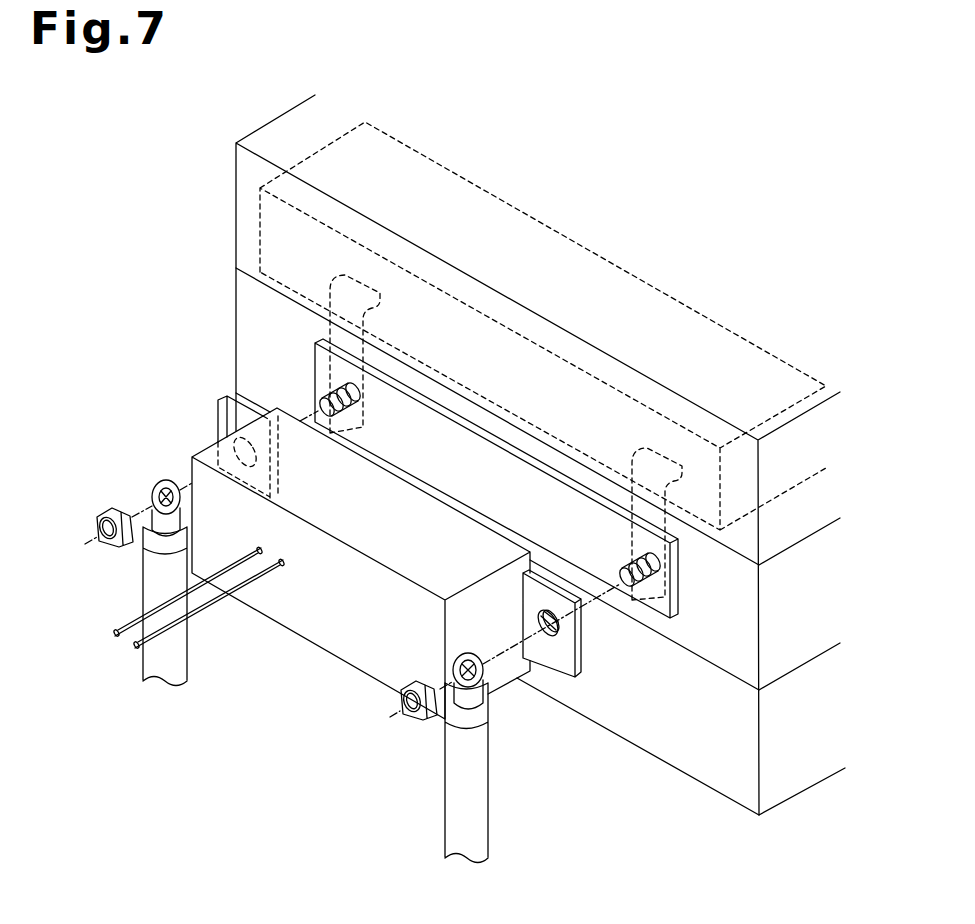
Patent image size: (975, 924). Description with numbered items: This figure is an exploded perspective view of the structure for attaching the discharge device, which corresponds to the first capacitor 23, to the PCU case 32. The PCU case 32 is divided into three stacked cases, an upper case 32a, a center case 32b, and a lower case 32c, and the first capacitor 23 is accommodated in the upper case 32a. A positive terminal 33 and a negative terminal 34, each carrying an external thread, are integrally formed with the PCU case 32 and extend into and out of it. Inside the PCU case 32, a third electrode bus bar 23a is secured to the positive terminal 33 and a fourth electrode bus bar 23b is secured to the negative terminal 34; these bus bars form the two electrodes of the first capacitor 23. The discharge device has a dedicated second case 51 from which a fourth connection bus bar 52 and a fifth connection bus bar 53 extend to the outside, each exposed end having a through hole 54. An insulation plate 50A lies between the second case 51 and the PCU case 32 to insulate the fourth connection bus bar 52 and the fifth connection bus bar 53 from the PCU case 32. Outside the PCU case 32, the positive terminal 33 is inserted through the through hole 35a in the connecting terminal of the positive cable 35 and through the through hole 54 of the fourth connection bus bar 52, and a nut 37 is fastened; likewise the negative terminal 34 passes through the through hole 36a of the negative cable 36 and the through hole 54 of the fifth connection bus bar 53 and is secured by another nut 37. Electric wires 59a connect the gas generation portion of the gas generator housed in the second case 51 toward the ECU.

The first capacitor 23 is at (345, 133).
The third electrode bus bar 23a is at (347, 276).
The fourth electrode bus bar 23b is at (648, 449).
The PCU case 32 is at (163, 241).
The upper case 32a is at (237, 254).
The center case 32b is at (237, 312).
The lower case 32c is at (234, 396).
The positive terminal 33 is at (318, 393).
The negative terminal 34 is at (622, 562).
The positive cable 35 is at (145, 582).
The through hole 35a is at (160, 481).
The negative cable 36 is at (445, 792).
The through hole 36a is at (470, 681).
The nut 37 is at (95, 512).
The insulation plate 50A is at (462, 420).
The second case 51 is at (417, 498).
The fourth connection bus bar 52 is at (218, 409).
The fifth connection bus bar 53 is at (563, 652).
The through hole 54 is at (256, 457).
The electric wires 59a is at (193, 600).